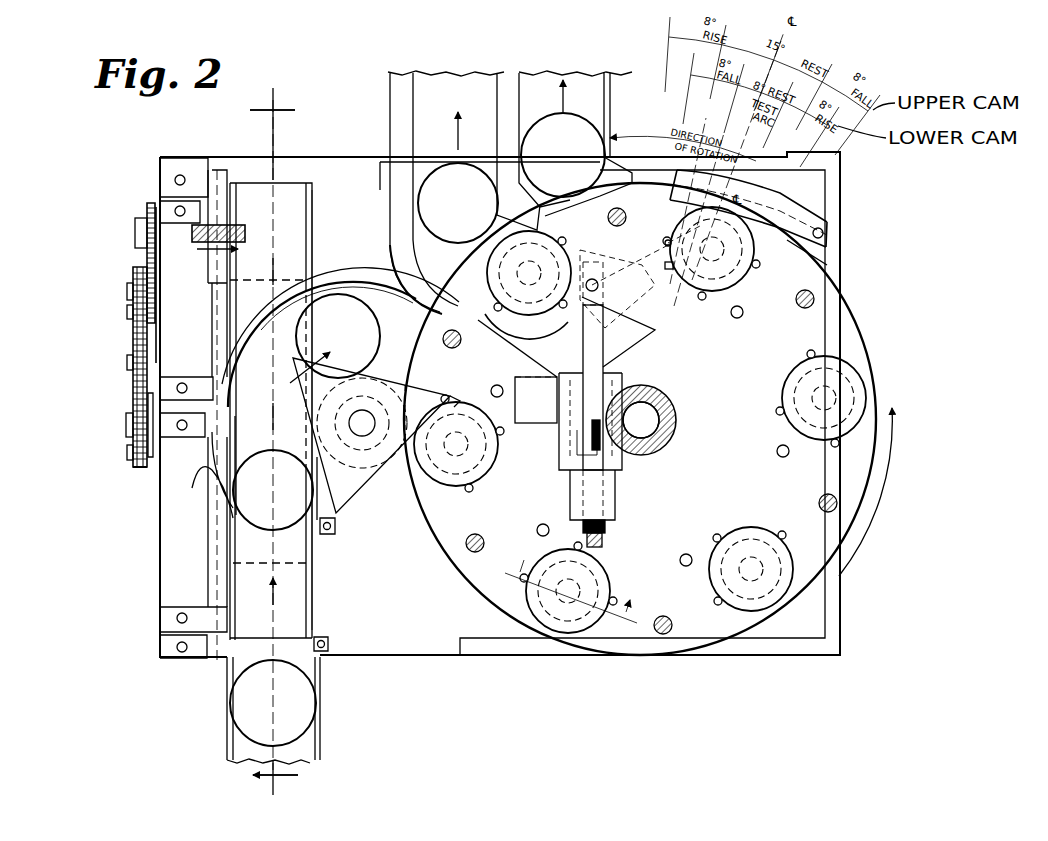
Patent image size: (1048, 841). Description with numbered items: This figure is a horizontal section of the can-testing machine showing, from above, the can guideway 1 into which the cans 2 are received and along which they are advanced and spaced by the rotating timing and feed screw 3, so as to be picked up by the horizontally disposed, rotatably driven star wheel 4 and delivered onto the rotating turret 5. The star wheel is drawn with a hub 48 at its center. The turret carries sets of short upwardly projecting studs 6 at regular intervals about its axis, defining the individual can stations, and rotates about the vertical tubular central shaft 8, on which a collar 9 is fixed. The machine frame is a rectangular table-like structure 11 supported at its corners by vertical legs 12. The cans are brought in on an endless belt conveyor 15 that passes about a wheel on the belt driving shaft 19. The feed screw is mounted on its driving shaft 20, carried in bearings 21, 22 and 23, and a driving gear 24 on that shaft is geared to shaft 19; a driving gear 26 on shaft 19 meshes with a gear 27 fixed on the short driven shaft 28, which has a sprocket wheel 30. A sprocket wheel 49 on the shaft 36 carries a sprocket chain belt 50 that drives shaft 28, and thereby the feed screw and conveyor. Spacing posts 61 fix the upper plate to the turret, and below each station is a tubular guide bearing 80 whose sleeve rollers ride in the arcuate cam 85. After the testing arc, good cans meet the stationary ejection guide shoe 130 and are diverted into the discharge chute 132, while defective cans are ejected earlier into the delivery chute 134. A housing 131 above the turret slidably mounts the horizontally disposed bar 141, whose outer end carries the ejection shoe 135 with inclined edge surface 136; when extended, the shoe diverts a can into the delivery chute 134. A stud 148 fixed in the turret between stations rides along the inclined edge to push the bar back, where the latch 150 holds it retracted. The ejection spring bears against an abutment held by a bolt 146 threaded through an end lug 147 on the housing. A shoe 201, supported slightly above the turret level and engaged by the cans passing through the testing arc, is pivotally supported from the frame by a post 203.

The can guideway 1 is at (320, 619).
The cans 2 is at (460, 186).
The timing and feed screw 3 is at (184, 491).
The star wheel 4 is at (360, 496).
The turret 5 is at (640, 655).
The studs 6 is at (565, 252).
The central shaft 8 is at (658, 420).
The collar 9 is at (668, 442).
The table-like structure 11 is at (808, 203).
The legs 12 is at (840, 186).
The endless belt conveyor 15 is at (290, 228).
The belt driving shaft 19 is at (136, 233).
The driving shaft 20 is at (212, 330).
The bearing 21 is at (210, 652).
The bearing 22 is at (210, 382).
The bearing 23 is at (206, 170).
The driving gear 24 is at (246, 228).
The driving gear 26 is at (148, 206).
The gear 27 is at (132, 284).
The driven shaft 28 is at (127, 296).
The sprocket wheel 30 is at (128, 314).
The shaft 36 is at (126, 424).
The star wheel 48 is at (364, 420).
The sprocket wheel 49 is at (135, 464).
The sprocket chain belt 50 is at (128, 364).
The spacing posts 61 is at (620, 215).
The tubular guide bearing 80 is at (786, 392).
The arcuate cam 85 is at (666, 262).
The ejection guide shoe 130 is at (490, 338).
The housing 131 is at (584, 443).
The discharge chute 132 is at (470, 78).
The delivery chute 134 is at (590, 78).
The ejection shoe 135 is at (670, 341).
The inclined edge surface 136 is at (644, 318).
The bar 141 is at (612, 364).
The bolt 146 is at (606, 547).
The end lug 147 is at (606, 535).
The stud 148 is at (744, 314).
The latch 150 is at (592, 455).
The shoe 201 is at (832, 196).
The post 203 is at (835, 246).